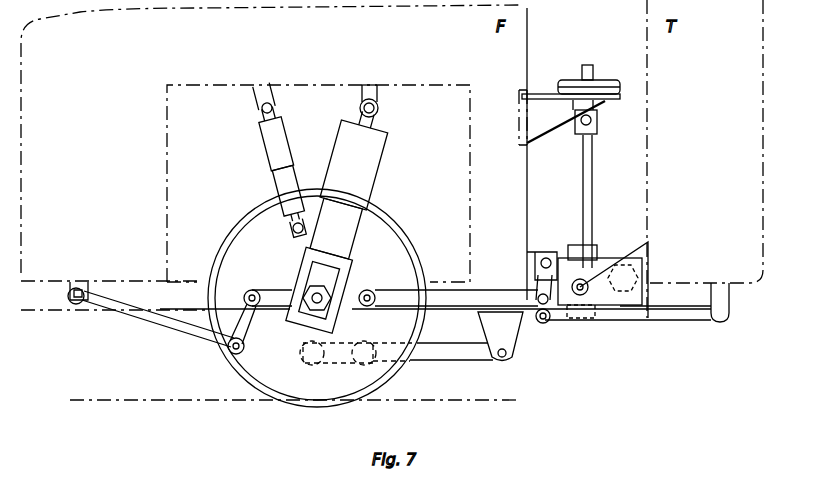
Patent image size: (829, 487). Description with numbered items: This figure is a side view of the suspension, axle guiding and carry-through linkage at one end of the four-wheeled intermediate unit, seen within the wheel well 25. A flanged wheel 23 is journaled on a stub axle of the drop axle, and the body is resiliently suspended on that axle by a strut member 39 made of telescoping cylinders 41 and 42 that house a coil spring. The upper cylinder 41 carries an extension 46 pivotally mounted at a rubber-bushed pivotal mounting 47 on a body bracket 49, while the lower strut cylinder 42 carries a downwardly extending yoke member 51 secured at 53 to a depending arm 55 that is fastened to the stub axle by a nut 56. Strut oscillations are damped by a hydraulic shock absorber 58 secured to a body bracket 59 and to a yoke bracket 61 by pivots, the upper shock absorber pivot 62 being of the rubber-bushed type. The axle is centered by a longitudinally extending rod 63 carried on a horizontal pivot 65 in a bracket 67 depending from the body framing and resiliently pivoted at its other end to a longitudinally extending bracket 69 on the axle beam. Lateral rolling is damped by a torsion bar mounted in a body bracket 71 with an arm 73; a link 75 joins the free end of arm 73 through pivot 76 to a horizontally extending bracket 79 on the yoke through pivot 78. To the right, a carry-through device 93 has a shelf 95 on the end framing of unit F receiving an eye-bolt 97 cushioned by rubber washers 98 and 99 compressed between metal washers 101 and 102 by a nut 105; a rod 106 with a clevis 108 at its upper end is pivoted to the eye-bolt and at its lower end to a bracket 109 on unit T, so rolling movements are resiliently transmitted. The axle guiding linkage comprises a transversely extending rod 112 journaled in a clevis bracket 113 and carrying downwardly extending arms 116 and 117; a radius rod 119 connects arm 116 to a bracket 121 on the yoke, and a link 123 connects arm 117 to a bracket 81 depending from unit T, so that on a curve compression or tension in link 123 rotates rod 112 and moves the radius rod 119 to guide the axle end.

The flanged wheel 23 is at (311, 392).
The wheel well 25 is at (216, 130).
The resilient strut member 39 is at (390, 179).
The upper cylinder 41 is at (374, 143).
The lower strut cylinder 42 is at (350, 226).
The extension 46 is at (379, 109).
The pivotal mounting 47 is at (360, 105).
The body bracket 49 is at (370, 92).
The yoke member 51 is at (298, 264).
The securement 53 is at (350, 341).
The depending arm 55 is at (292, 344).
The nut 56 is at (356, 265).
The hydraulic shock absorber 58 is at (256, 161).
The body bracket 59 is at (256, 97).
The yoke bracket 61 is at (275, 227).
The upper pivot 62 is at (273, 103).
The longitudinally extending rod 63 is at (452, 352).
The horizontal pivot 65 is at (508, 355).
The bracket 67 is at (508, 334).
The longitudinally extending bracket 69 is at (76, 304).
The body bracket 71 is at (76, 284).
The longitudinally extending arm 73 is at (155, 318).
The link 75 is at (236, 322).
The transverse horizontal pivot 76 is at (226, 351).
The horizontally extending pivot 78 is at (244, 292).
The horizontally extending bracket 79 is at (247, 287).
The bracket 81 is at (731, 297).
The carry-through device 93 is at (603, 178).
The shelf 95 is at (541, 92).
The eye-bolt 97 is at (596, 68).
The rubber washer 98 is at (606, 88).
The rubber washer 99 is at (600, 100).
The metal washer 101 is at (571, 80).
The metal washer 102 is at (596, 112).
The nut 105 is at (601, 78).
The rod 106 is at (579, 190).
The clevis 108 is at (576, 126).
The bracket 109 is at (622, 262).
The transversely extending rod 112 is at (549, 258).
The clevis bracket 113 is at (532, 253).
The downwardly extending arm 116 is at (516, 281).
The downwardly extending arm 117 is at (551, 319).
The radius rod 119 is at (442, 298).
The bracket 121 is at (372, 290).
The link 123 is at (666, 321).